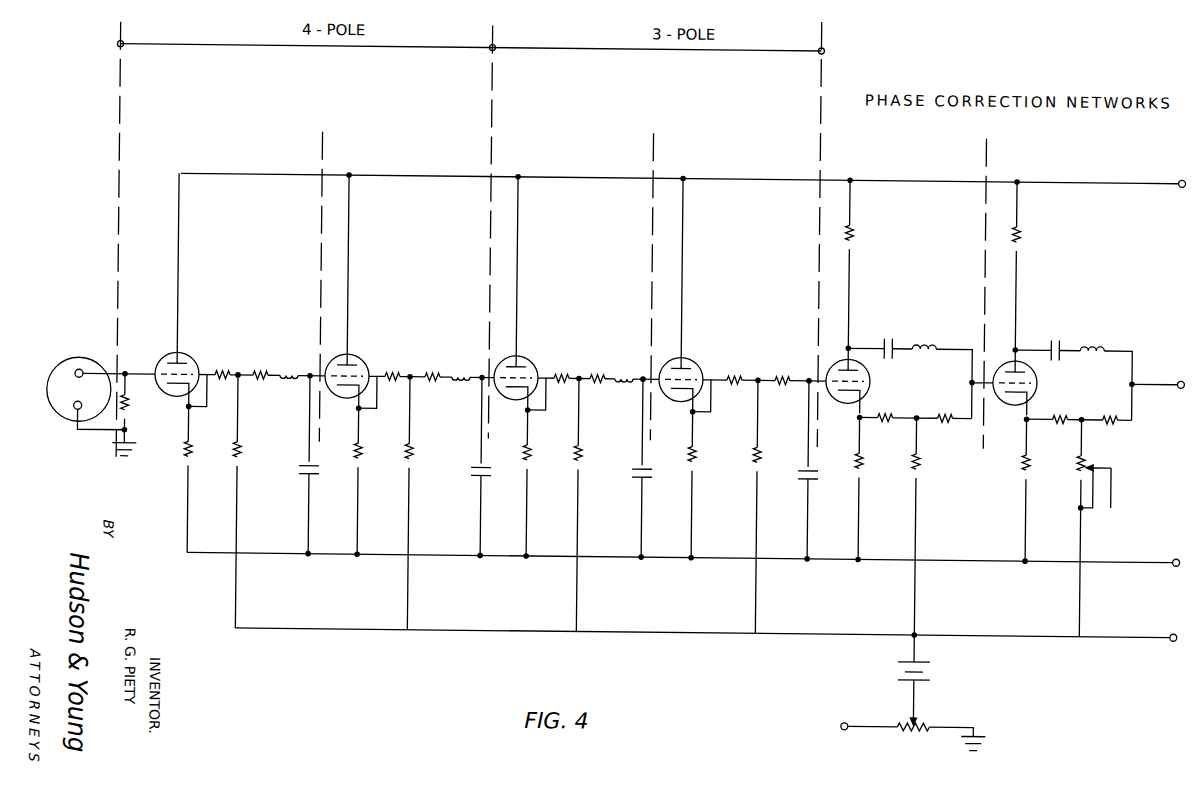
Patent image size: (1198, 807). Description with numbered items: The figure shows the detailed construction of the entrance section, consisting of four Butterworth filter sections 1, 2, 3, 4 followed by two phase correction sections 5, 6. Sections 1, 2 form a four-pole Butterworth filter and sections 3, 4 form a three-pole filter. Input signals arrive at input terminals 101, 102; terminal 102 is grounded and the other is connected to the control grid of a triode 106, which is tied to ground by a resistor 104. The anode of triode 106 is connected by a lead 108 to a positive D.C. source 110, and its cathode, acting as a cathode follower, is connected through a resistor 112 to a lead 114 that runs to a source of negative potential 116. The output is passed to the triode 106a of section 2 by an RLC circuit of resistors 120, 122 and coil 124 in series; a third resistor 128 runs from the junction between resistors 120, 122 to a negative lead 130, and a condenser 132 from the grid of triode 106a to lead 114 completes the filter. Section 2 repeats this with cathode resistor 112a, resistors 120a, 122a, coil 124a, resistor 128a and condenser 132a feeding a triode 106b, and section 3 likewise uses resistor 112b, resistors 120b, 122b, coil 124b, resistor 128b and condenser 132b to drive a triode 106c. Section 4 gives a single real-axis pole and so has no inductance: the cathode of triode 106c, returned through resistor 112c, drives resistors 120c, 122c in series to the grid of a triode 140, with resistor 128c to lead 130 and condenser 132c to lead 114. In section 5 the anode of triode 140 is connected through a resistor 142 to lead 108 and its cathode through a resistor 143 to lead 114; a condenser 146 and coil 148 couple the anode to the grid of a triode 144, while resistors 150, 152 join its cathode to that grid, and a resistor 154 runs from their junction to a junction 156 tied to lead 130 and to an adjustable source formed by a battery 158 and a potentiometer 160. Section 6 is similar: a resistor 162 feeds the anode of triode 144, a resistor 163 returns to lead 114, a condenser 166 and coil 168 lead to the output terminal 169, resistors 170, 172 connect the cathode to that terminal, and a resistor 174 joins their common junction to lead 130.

The Butterworth filter section 1 is at (187, 173).
The Butterworth filter section 2 is at (367, 172).
The Butterworth filter section 3 is at (537, 172).
The Butterworth filter section 4 is at (699, 171).
The phase correction section 5 is at (865, 173).
The phase correction section 6 is at (1034, 172).
The input terminal 101 is at (76, 369).
The input terminal 102 is at (74, 410).
The resistor 104 is at (131, 405).
The triode 106 is at (166, 355).
The triode 106a is at (354, 353).
The triode 106b is at (523, 353).
The triode 106c is at (686, 351).
The lead 108 is at (260, 172).
The D.C. source 110 is at (1177, 170).
The resistor 112 is at (183, 456).
The resistor 112a is at (360, 463).
The resistor 112b is at (530, 466).
The resistor 112c is at (698, 454).
The lead 114 is at (206, 557).
The source of negative potential 116 is at (1173, 548).
The resistor 120 is at (220, 372).
The resistor 120a is at (399, 374).
The resistor 120b is at (566, 374).
The resistor 120c is at (735, 371).
The resistor 122 is at (256, 372).
The resistor 122a is at (453, 374).
The resistor 122b is at (612, 373).
The resistor 122c is at (783, 371).
The coil 124 is at (292, 372).
The coil 124a is at (463, 383).
The coil 124b is at (627, 382).
The third resistor 128 is at (242, 448).
The third resistor 128a is at (417, 454).
The third resistor 128b is at (583, 450).
The third resistor 128c is at (760, 447).
The lead 130 is at (398, 632).
The condenser 132 is at (300, 474).
The condenser 132a is at (471, 476).
The condenser 132b is at (639, 478).
The condenser 132c is at (805, 477).
The triode 140 is at (872, 384).
The resistor 142 is at (856, 232).
The resistor 143 is at (864, 461).
The triode 144 is at (1039, 383).
The condenser 146 is at (883, 331).
The coil 148 is at (932, 333).
The resistor 150 is at (892, 411).
The resistor 152 is at (948, 411).
The third resistor 154 is at (924, 463).
The junction 156 is at (905, 633).
The battery 158 is at (930, 662).
The potentiometer 160 is at (905, 727).
The resistor 162 is at (1022, 231).
The resistor 163 is at (1023, 467).
The condenser 166 is at (1053, 330).
The coil 168 is at (1102, 331).
The output terminal 169 is at (1181, 369).
The resistor 170 is at (1064, 412).
The resistor 172 is at (1116, 411).
The resistor 174 is at (1080, 465).